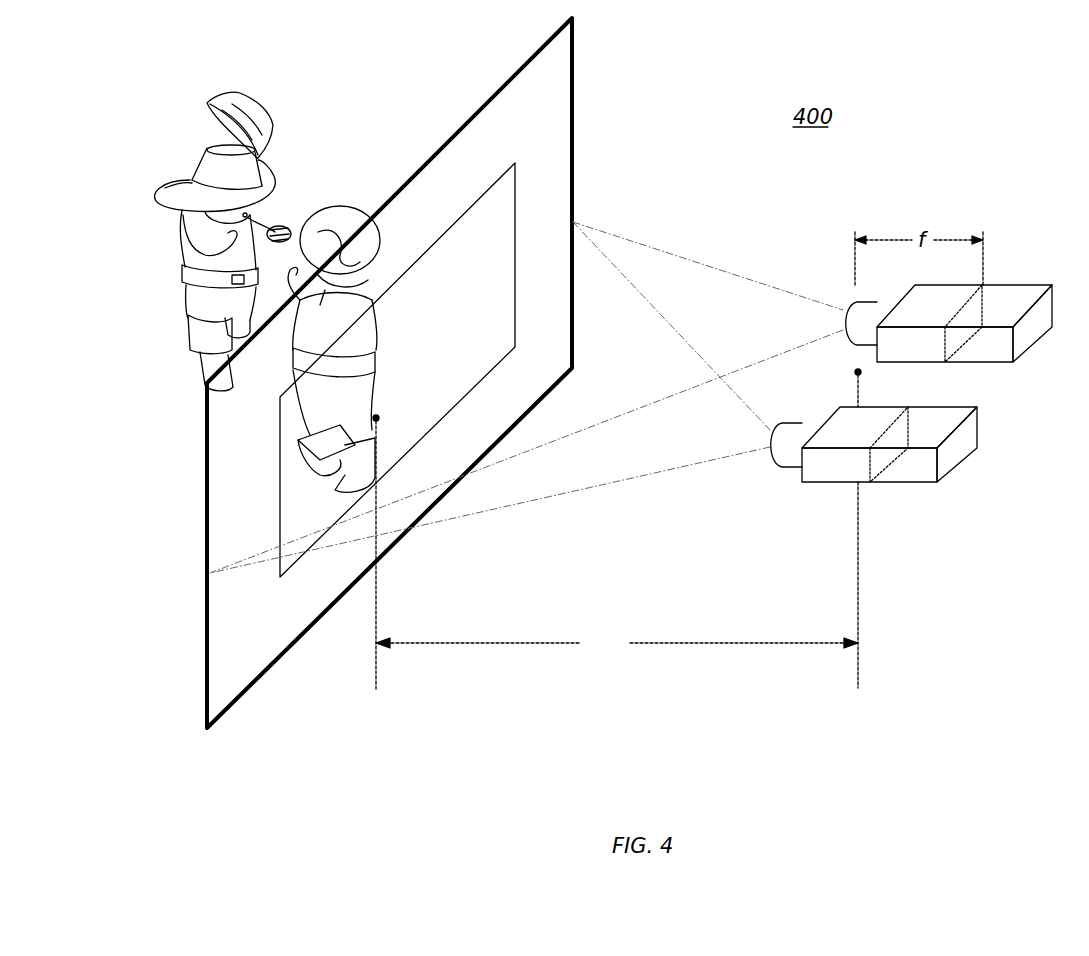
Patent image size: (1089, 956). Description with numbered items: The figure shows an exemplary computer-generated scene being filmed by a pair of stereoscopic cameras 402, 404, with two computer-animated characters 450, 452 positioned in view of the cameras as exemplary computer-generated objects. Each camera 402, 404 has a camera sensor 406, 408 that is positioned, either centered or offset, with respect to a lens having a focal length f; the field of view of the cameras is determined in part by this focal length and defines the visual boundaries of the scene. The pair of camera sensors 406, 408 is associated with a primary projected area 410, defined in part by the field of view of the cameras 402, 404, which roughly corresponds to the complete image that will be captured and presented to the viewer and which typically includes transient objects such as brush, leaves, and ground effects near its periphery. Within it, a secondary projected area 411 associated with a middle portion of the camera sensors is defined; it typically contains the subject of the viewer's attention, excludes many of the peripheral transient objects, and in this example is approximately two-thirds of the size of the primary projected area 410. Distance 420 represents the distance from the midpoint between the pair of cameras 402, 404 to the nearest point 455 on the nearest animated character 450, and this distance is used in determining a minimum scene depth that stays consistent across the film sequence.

The stereoscopic camera 402 is at (886, 467).
The stereoscopic camera 404 is at (965, 305).
The camera sensor 406 is at (870, 482).
The camera sensor 408 is at (987, 302).
The primary projected area 410 is at (575, 72).
The secondary projected area 411 is at (497, 163).
The distance 420 is at (617, 643).
The animated character 450 is at (323, 207).
The animated character 452 is at (267, 100).
The nearest point 455 is at (378, 416).